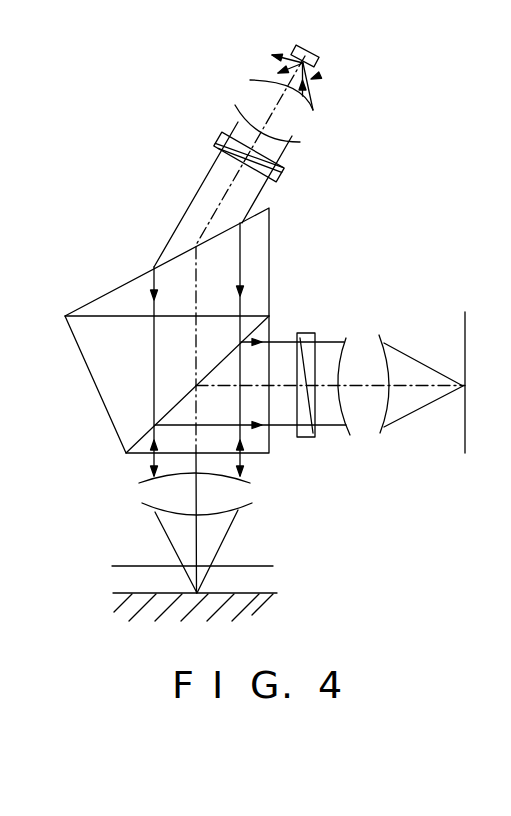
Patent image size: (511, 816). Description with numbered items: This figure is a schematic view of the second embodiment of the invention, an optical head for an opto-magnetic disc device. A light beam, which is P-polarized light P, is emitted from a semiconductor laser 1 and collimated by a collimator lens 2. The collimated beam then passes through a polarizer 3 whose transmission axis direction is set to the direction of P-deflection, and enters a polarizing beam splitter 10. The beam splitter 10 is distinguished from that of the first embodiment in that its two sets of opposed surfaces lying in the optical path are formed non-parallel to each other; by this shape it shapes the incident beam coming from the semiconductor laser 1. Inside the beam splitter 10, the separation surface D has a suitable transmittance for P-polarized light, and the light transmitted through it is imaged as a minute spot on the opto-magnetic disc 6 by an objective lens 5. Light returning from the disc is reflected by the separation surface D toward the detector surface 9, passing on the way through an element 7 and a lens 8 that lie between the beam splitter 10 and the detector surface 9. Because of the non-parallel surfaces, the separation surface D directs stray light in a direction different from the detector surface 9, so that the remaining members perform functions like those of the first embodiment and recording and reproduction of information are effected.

The semiconductor laser 1 is at (316, 53).
The P-polarized light P is at (312, 78).
The collimator lens 2 is at (293, 120).
The polarizer 3 is at (287, 173).
The polarizing beam splitter 10 is at (260, 247).
The separation surface D is at (145, 433).
The plate / wedge 7 is at (308, 335).
The imaging lens 8 is at (362, 352).
The detector surface 9 is at (467, 318).
The objective lens 5 is at (233, 495).
The opto-magnetic disc 6 is at (262, 587).